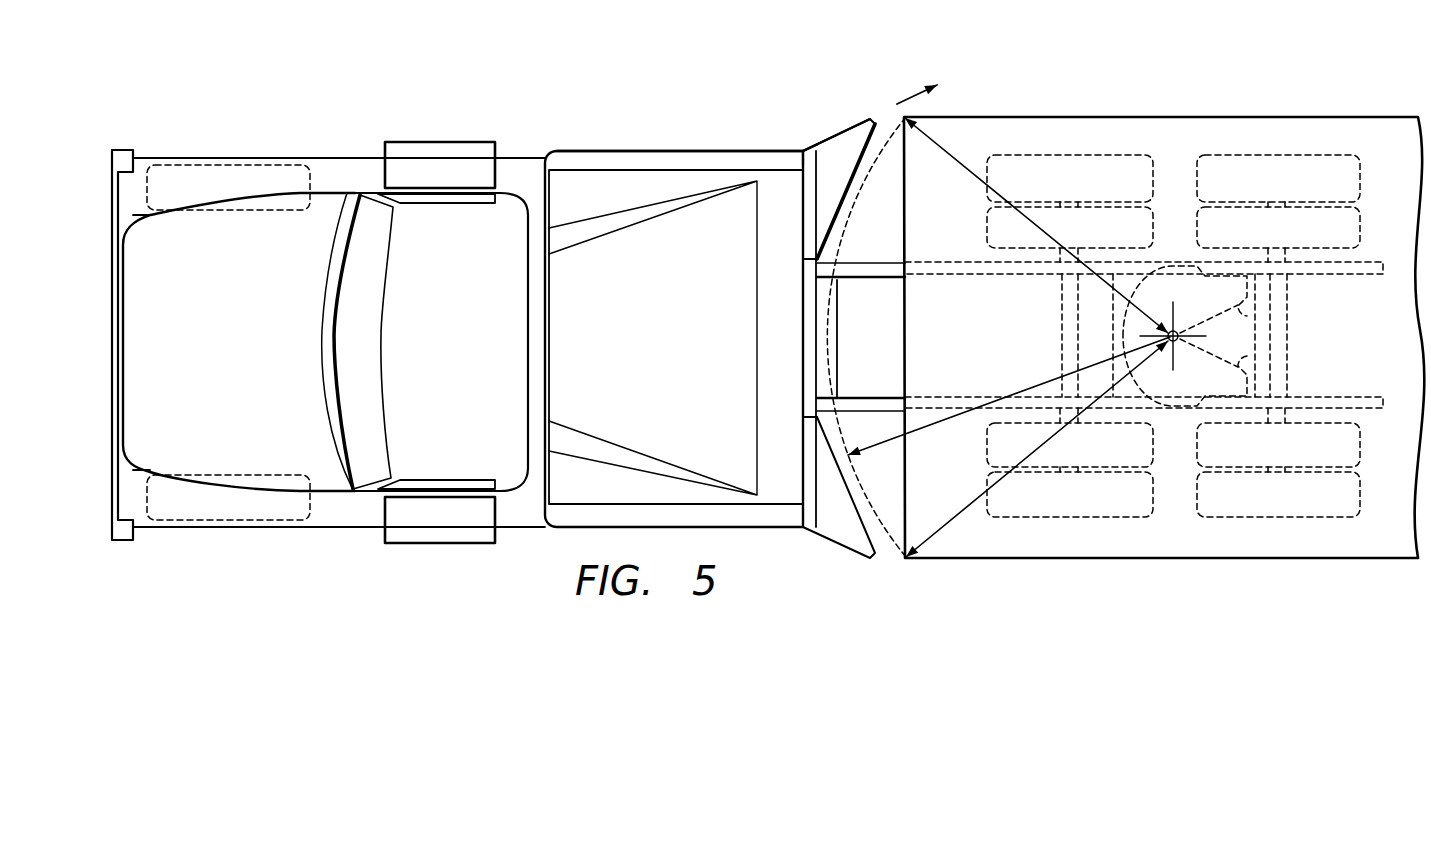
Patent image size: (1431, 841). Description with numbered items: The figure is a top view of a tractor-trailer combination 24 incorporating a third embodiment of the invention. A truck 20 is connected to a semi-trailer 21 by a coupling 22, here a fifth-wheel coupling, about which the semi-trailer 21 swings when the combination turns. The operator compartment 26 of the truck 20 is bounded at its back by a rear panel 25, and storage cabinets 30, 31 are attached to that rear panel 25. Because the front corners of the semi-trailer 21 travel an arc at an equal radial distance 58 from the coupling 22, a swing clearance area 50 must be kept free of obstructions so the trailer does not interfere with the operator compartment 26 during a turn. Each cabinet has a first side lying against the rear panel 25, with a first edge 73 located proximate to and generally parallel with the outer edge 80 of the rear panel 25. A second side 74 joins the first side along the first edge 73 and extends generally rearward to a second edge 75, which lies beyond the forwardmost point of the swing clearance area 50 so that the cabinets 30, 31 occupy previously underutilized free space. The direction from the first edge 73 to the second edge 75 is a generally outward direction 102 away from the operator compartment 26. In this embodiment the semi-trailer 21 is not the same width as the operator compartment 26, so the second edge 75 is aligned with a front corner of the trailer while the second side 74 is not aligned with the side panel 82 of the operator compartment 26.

The truck 20 is at (425, 100).
The semi-trailer 21 is at (1188, 113).
The coupling 22 is at (1277, 304).
The tractor-trailer combination 24 is at (824, 280).
The rear panel 25 is at (809, 341).
The operator compartment 26 is at (684, 354).
The storage cabinet 30 is at (841, 517).
The storage cabinet 31 is at (841, 176).
The swing clearance area 50 is at (868, 238).
The radial distance 58 is at (948, 152).
The first edge 73 is at (803, 145).
The second side 74 is at (840, 128).
The second edge 75 is at (874, 115).
The outer edge 80 is at (800, 148).
The side panel 82 is at (668, 150).
The outward direction 102 is at (908, 100).